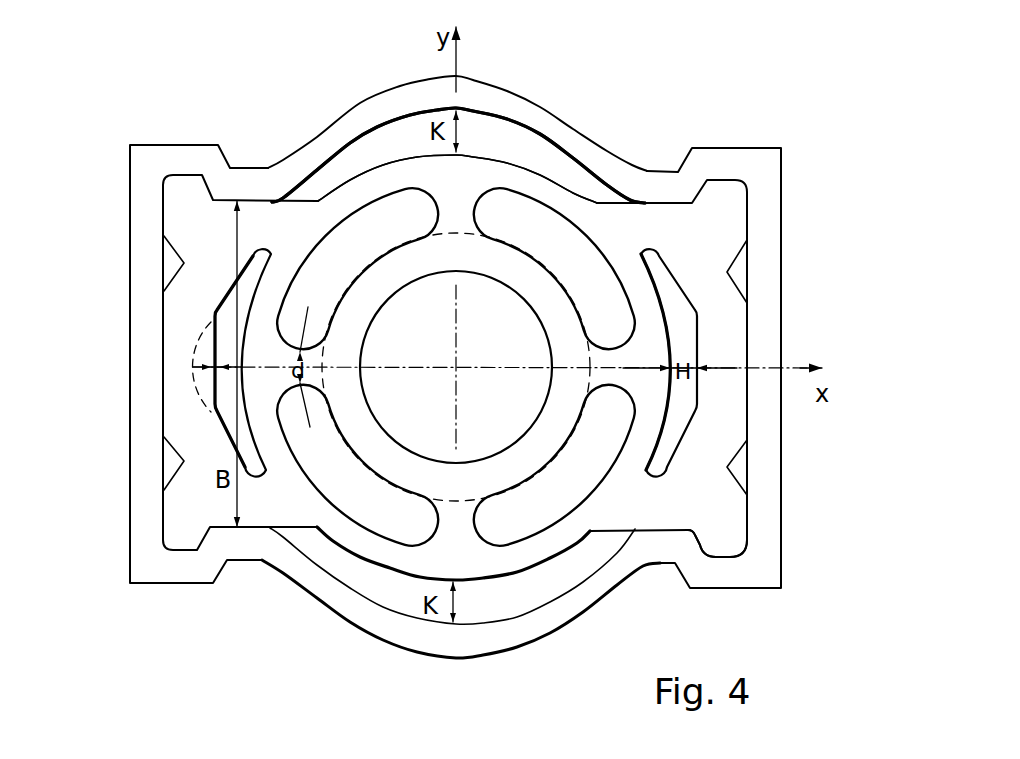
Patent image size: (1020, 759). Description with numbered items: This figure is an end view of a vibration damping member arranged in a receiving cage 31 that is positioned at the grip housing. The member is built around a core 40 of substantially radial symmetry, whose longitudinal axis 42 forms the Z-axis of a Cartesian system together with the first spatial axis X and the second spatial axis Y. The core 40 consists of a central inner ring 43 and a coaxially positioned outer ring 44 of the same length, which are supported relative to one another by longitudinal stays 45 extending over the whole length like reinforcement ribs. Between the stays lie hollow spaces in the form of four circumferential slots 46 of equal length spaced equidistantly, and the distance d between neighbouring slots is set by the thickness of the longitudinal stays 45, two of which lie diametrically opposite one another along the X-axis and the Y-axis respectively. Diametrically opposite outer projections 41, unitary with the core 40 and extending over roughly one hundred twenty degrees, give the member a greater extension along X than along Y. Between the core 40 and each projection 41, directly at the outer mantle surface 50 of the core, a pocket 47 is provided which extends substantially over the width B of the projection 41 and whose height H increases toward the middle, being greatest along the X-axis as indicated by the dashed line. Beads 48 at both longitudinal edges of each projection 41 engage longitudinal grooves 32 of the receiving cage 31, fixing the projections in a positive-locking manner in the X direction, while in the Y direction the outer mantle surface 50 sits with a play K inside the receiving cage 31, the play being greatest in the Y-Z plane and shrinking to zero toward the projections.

The receiving cage 31 is at (183, 584).
The longitudinal grooves 32 is at (693, 549).
The core 40 is at (548, 172).
The outer projections 41 is at (210, 253).
The longitudinal axis 42 is at (457, 367).
The central inner ring 43 is at (392, 282).
The outer ring 44 is at (365, 183).
The longitudinal stays 45 is at (457, 208).
The circumferential slots 46 is at (548, 505).
The pocket 47 is at (218, 410).
The beads 48 is at (727, 543).
The outer mantle surface 50 is at (398, 150).